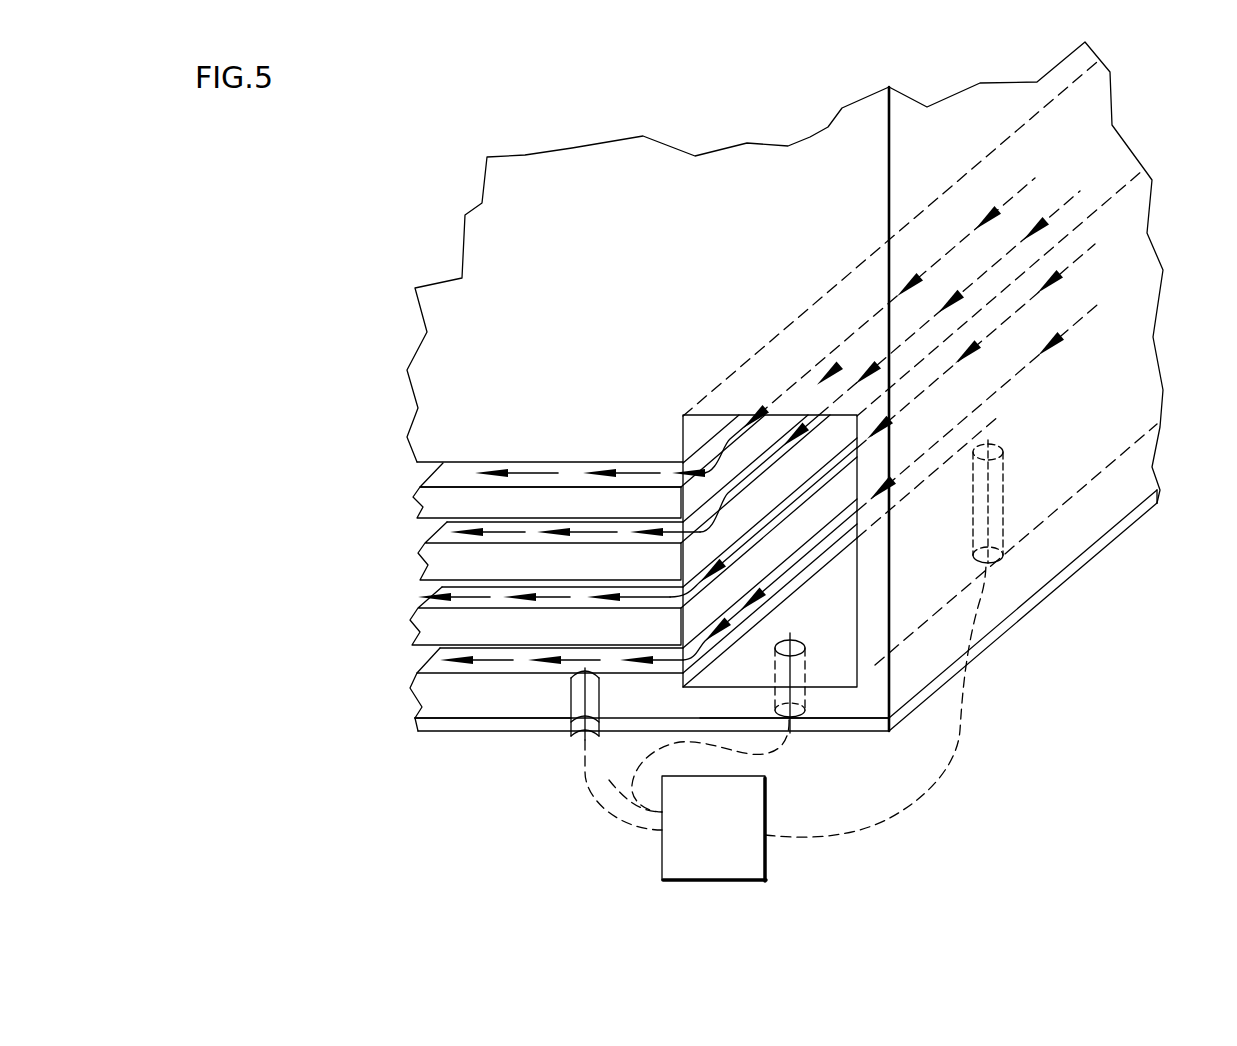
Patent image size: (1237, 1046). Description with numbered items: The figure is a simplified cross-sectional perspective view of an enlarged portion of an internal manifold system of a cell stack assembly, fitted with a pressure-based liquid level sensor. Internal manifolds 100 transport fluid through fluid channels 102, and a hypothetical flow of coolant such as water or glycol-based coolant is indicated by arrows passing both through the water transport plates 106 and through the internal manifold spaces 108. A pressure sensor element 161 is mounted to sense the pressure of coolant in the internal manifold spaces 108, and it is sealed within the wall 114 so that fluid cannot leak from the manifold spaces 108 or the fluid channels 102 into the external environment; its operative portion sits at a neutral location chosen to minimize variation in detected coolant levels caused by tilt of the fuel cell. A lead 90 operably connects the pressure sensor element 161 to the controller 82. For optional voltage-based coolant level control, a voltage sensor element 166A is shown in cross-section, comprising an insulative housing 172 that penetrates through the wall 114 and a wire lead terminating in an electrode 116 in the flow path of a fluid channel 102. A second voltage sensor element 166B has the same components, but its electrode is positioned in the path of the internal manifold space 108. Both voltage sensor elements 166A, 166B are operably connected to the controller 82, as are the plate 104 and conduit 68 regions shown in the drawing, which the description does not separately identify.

The water transport plates 106 is at (525, 212).
The internal manifold spaces 108 is at (1105, 268).
The internal manifolds 100 is at (683, 437).
The fluid channels 102 is at (423, 475).
The plate 104 is at (594, 462).
The wall 114 is at (1043, 595).
The electrode 116 is at (588, 670).
The insulative housing 172 is at (578, 699).
The pressure sensor element 161 is at (996, 443).
The controller 82 is at (731, 844).
The conduit 68 is at (603, 767).
The lead 90 is at (955, 738).
The voltage sensor element 166A is at (573, 742).
The voltage sensor element 166B is at (813, 728).